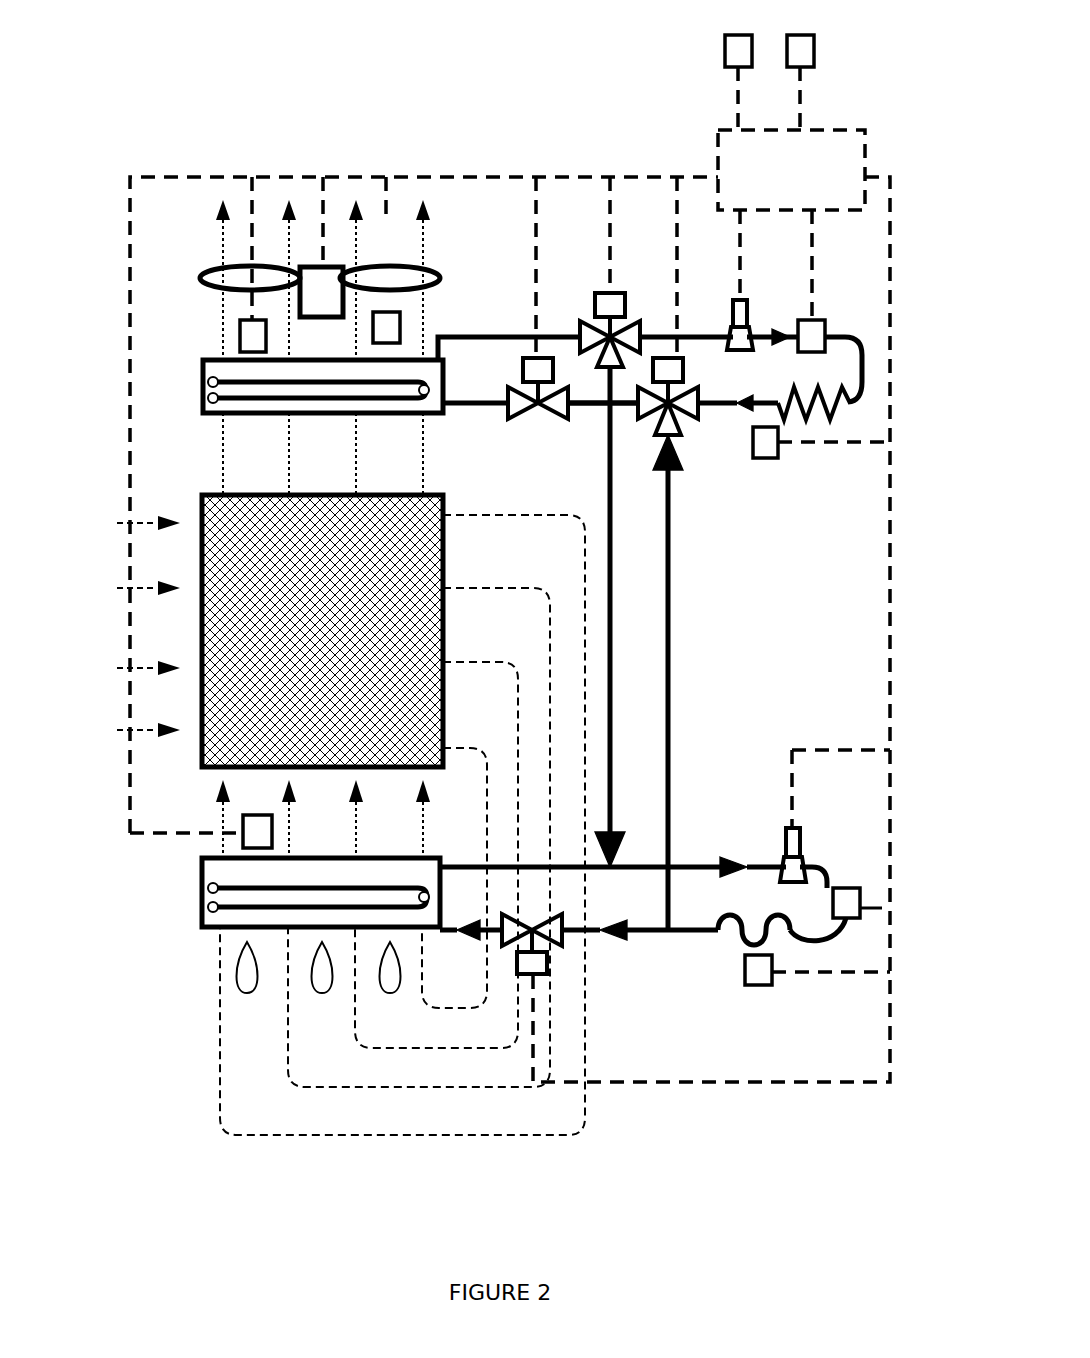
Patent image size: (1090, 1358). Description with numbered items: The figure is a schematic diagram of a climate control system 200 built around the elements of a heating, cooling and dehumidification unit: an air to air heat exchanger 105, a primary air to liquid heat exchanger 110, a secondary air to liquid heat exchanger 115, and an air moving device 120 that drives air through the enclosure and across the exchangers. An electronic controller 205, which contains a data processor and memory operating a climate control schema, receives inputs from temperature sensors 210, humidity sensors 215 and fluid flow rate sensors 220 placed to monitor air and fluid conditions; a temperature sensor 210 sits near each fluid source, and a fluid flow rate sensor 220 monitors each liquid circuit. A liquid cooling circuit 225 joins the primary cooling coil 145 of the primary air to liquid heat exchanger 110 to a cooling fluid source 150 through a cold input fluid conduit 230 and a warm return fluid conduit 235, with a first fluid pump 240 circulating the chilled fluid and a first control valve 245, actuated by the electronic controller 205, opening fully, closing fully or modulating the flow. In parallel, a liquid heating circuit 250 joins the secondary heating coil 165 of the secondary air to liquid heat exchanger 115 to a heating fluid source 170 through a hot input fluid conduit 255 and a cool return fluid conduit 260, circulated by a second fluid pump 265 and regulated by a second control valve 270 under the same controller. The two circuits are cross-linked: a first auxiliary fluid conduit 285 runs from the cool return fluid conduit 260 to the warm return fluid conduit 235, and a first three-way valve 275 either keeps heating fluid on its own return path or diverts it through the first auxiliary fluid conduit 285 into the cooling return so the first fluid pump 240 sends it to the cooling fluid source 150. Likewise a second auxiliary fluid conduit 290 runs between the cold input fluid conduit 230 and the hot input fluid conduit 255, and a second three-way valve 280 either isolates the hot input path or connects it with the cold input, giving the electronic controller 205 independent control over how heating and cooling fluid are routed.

The climate control system 200 is at (198, 70).
The air to air heat exchanger 105 is at (202, 632).
The primary air to liquid heat exchanger 110 is at (202, 892).
The secondary air to liquid heat exchanger 115 is at (203, 383).
The air moving device 120 is at (300, 293).
The primary cooling coil 145 is at (202, 912).
The cooling fluid source 150 is at (786, 930).
The secondary heating coil 165 is at (203, 407).
The heating fluid source 170 is at (850, 407).
The electronic controller 205 is at (791, 170).
The temperature sensor 210 is at (725, 52).
The humidity sensor 215 is at (814, 52).
The fluid flow rate sensor 220 is at (386, 312).
The liquid cooling circuit 225 is at (699, 835).
The cold input fluid conduit 230 is at (628, 934).
The warm return fluid conduit 235 is at (640, 855).
The first fluid pump 240 is at (788, 853).
The first control valve 245 is at (549, 975).
The liquid heating circuit 250 is at (715, 462).
The hot input fluid conduit 255 is at (585, 408).
The cool return fluid conduit 260 is at (488, 335).
The second fluid pump 265 is at (733, 308).
The second control valve 270 is at (523, 413).
The first three-way valve 275 is at (600, 293).
The second three-way valve 280 is at (664, 355).
The first auxiliary fluid conduit 285 is at (611, 665).
The second auxiliary fluid conduit 290 is at (672, 642).